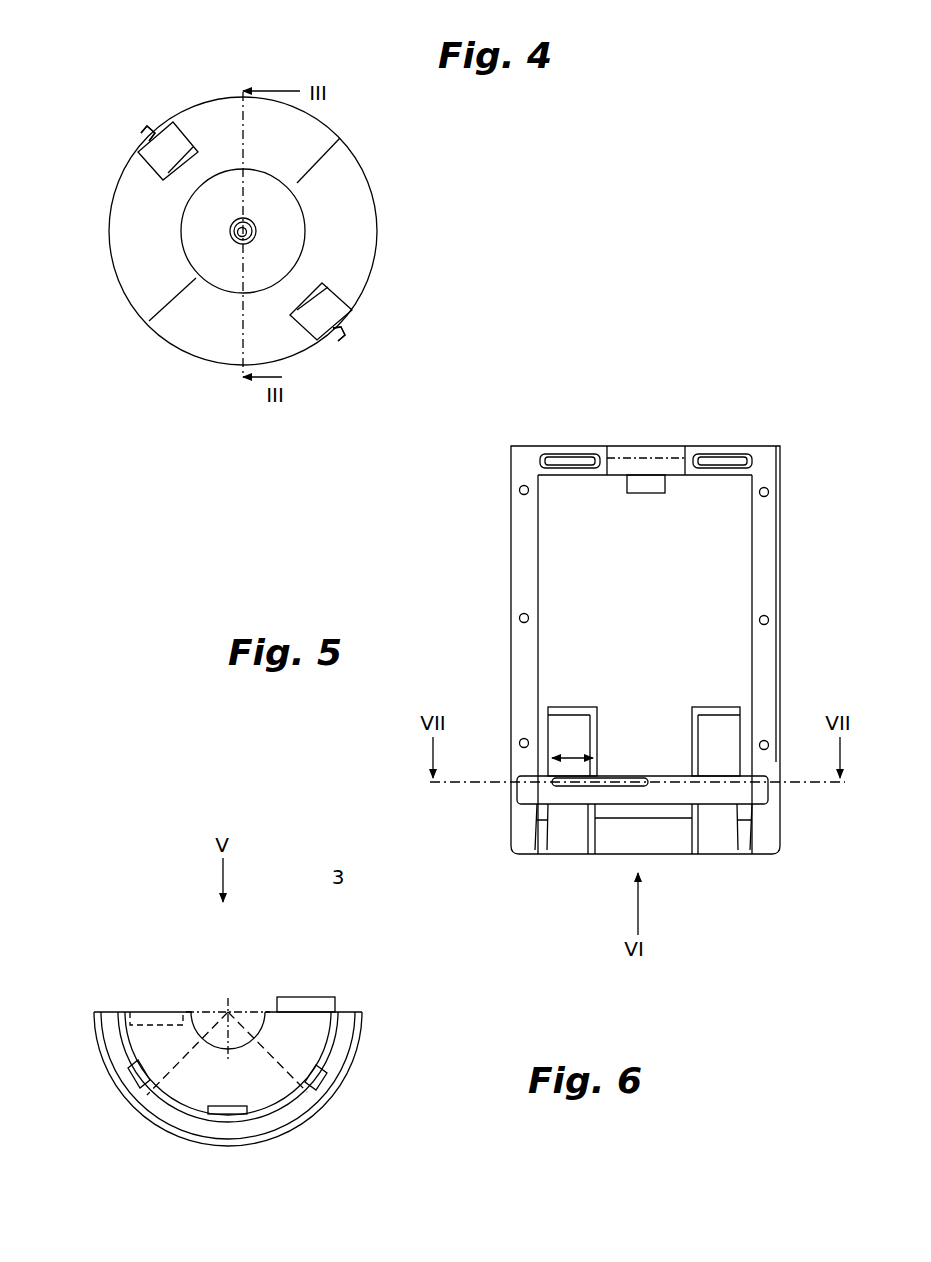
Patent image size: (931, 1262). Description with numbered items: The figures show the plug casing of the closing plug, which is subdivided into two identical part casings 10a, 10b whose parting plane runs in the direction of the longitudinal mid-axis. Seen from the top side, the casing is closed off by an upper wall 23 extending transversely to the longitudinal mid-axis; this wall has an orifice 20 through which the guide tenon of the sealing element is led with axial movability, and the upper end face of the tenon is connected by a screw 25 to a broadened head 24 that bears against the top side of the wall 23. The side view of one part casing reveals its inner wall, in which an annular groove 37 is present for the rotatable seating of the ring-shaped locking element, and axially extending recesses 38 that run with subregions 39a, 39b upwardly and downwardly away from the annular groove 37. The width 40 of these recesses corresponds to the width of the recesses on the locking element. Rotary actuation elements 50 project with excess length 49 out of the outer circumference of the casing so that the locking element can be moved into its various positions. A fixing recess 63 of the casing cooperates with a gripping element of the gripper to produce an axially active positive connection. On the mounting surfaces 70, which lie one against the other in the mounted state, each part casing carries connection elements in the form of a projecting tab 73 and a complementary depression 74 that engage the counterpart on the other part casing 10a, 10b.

In FIG. 4, the part casing 10a is at (360, 232).
In FIG. 5, the part casing 10a is at (760, 535).
In FIG. 6, the part casing 10a is at (108, 1093).
In FIG. 4, the part casing 10b is at (143, 278).
In FIG. 5, the orifice 20 is at (615, 455).
In FIG. 6, the orifice 20 is at (203, 1035).
In FIG. 4, the upper wall 23 is at (181, 322).
In FIG. 5, the upper wall 23 is at (693, 452).
In FIG. 4, the head 24 is at (278, 228).
In FIG. 4, the screw 25 is at (243, 244).
In FIG. 5, the annular groove 37 is at (536, 792).
In FIG. 5, the recess 38 is at (573, 846).
In FIG. 6, the recess 38 is at (150, 1068).
In FIG. 5, the subregion of recess 39a is at (575, 828).
In FIG. 5, the subregion of recess 39b is at (573, 745).
In FIG. 5, the width of recesses 40 is at (567, 767).
In FIG. 4, the excess length 49 is at (147, 132).
In FIG. 4, the rotary actuation element 50 is at (243, 233).
In FIG. 4, the fixing recess 63 is at (168, 152).
In FIG. 6, the fixing recess 63 is at (232, 1110).
In FIG. 5, the mounting surface 70 is at (527, 580).
In FIG. 6, the mounting surface 70 is at (105, 1013).
In FIG. 5, the projecting tab 73 is at (568, 457).
In FIG. 6, the projecting tab 73 is at (302, 1005).
In FIG. 5, the depression 74 is at (725, 460).
In FIG. 6, the depression 74 is at (173, 1013).